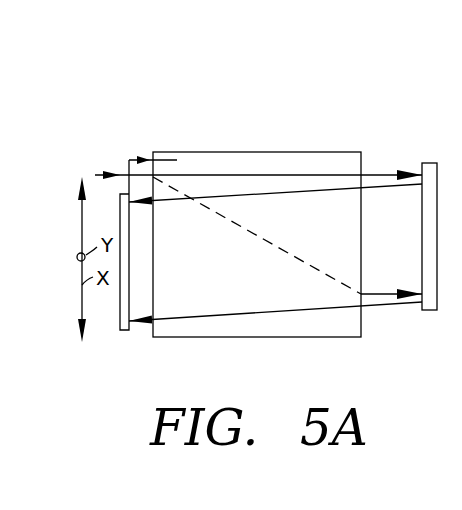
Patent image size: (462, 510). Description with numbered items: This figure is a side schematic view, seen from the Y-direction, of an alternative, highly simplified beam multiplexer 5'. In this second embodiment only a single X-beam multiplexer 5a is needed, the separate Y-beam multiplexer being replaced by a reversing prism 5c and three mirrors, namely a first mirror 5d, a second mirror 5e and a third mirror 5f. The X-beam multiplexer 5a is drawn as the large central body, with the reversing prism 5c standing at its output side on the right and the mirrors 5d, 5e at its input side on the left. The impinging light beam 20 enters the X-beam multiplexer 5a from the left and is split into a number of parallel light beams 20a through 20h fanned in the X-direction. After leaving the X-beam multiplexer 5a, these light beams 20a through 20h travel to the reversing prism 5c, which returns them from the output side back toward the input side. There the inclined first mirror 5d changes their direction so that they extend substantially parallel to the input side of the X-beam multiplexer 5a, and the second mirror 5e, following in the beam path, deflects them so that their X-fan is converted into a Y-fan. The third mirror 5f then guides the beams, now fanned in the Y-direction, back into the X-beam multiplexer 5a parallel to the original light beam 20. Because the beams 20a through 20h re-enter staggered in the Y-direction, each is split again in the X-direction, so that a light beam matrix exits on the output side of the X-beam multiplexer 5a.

The beam multiplexer 5' is at (170, 113).
The X-beam multiplexer 5a is at (267, 152).
The reversing prism 5c is at (430, 310).
The first mirror 5d is at (153, 267).
The second mirror 5e is at (128, 332).
The third mirror 5f is at (137, 151).
The light beam 20 is at (150, 178).
The light beam 20a is at (373, 175).
The light beam 20h is at (382, 295).